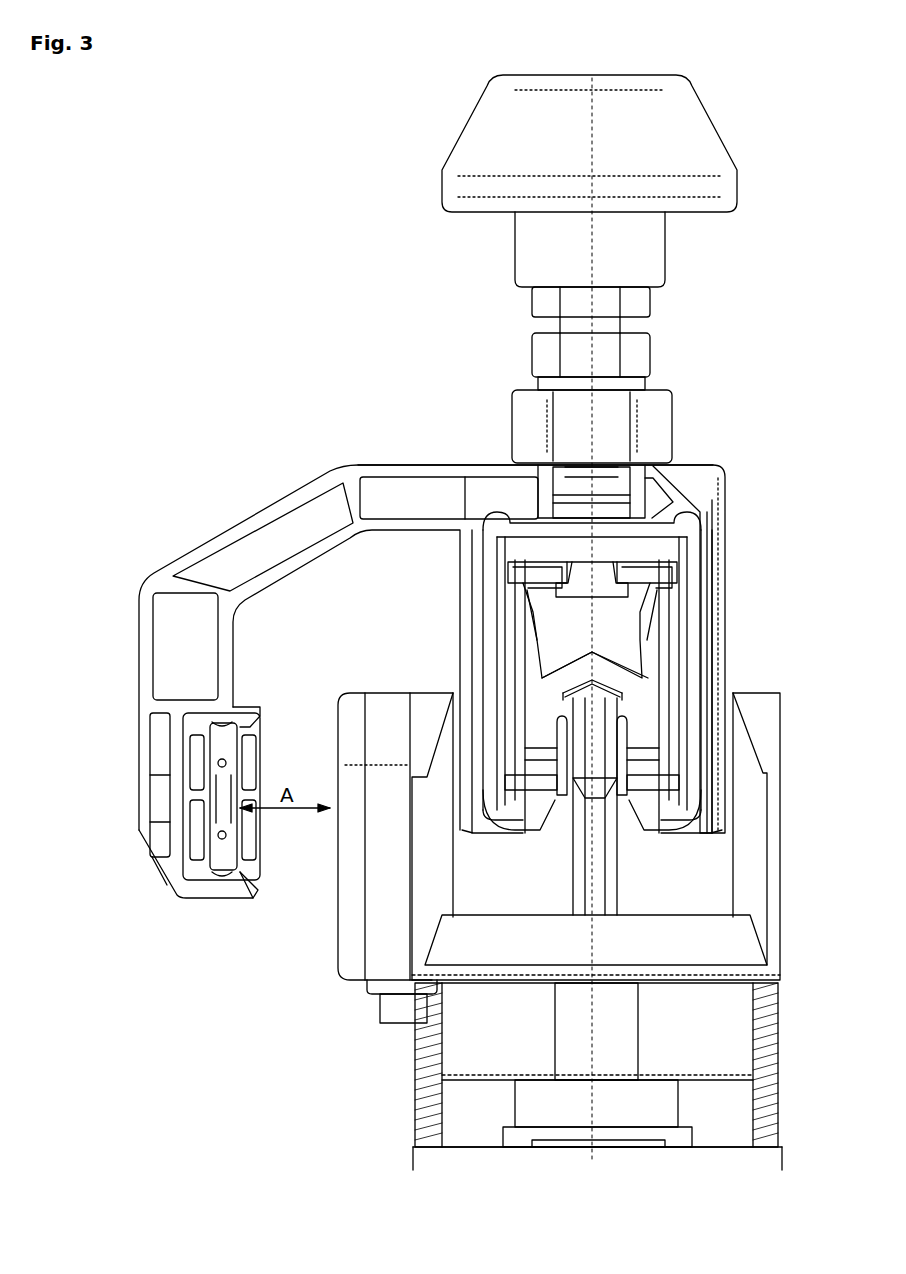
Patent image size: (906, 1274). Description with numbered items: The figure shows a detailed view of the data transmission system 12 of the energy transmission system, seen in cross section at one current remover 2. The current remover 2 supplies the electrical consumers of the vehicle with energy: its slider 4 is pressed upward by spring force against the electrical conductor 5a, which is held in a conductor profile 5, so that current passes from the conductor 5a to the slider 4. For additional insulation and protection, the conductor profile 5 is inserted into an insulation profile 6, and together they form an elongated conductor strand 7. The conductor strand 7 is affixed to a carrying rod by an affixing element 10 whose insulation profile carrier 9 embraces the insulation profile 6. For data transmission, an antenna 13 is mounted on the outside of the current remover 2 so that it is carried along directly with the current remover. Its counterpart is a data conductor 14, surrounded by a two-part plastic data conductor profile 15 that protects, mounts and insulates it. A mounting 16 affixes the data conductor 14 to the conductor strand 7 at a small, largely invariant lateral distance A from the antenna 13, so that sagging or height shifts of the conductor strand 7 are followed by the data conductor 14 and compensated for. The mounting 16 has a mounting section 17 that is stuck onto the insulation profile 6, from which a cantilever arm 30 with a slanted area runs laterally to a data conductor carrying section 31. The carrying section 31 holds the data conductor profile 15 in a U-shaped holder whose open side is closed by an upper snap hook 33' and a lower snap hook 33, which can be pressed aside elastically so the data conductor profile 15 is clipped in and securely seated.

The current remover 2 is at (412, 1130).
The slider 4 is at (573, 870).
The conductor profile 5 is at (583, 655).
The electrical conductor 5a is at (577, 688).
The insulation profile 6 is at (630, 795).
The conductor strand 7 is at (692, 622).
The insulation profile carrier 9 is at (725, 495).
The affixing element 10 is at (465, 126).
The data transmission system 12 is at (104, 582).
The antenna 13 is at (340, 950).
The data conductor 14 is at (250, 818).
The data conductor profile 15 is at (265, 760).
The mounting 16 is at (292, 420).
The mounting section 17 is at (412, 465).
The cantilever arm 30 is at (240, 520).
The data conductor carrying section 31 is at (160, 888).
The lower snap hook 33 is at (269, 895).
The upper snap hook 33' is at (271, 712).